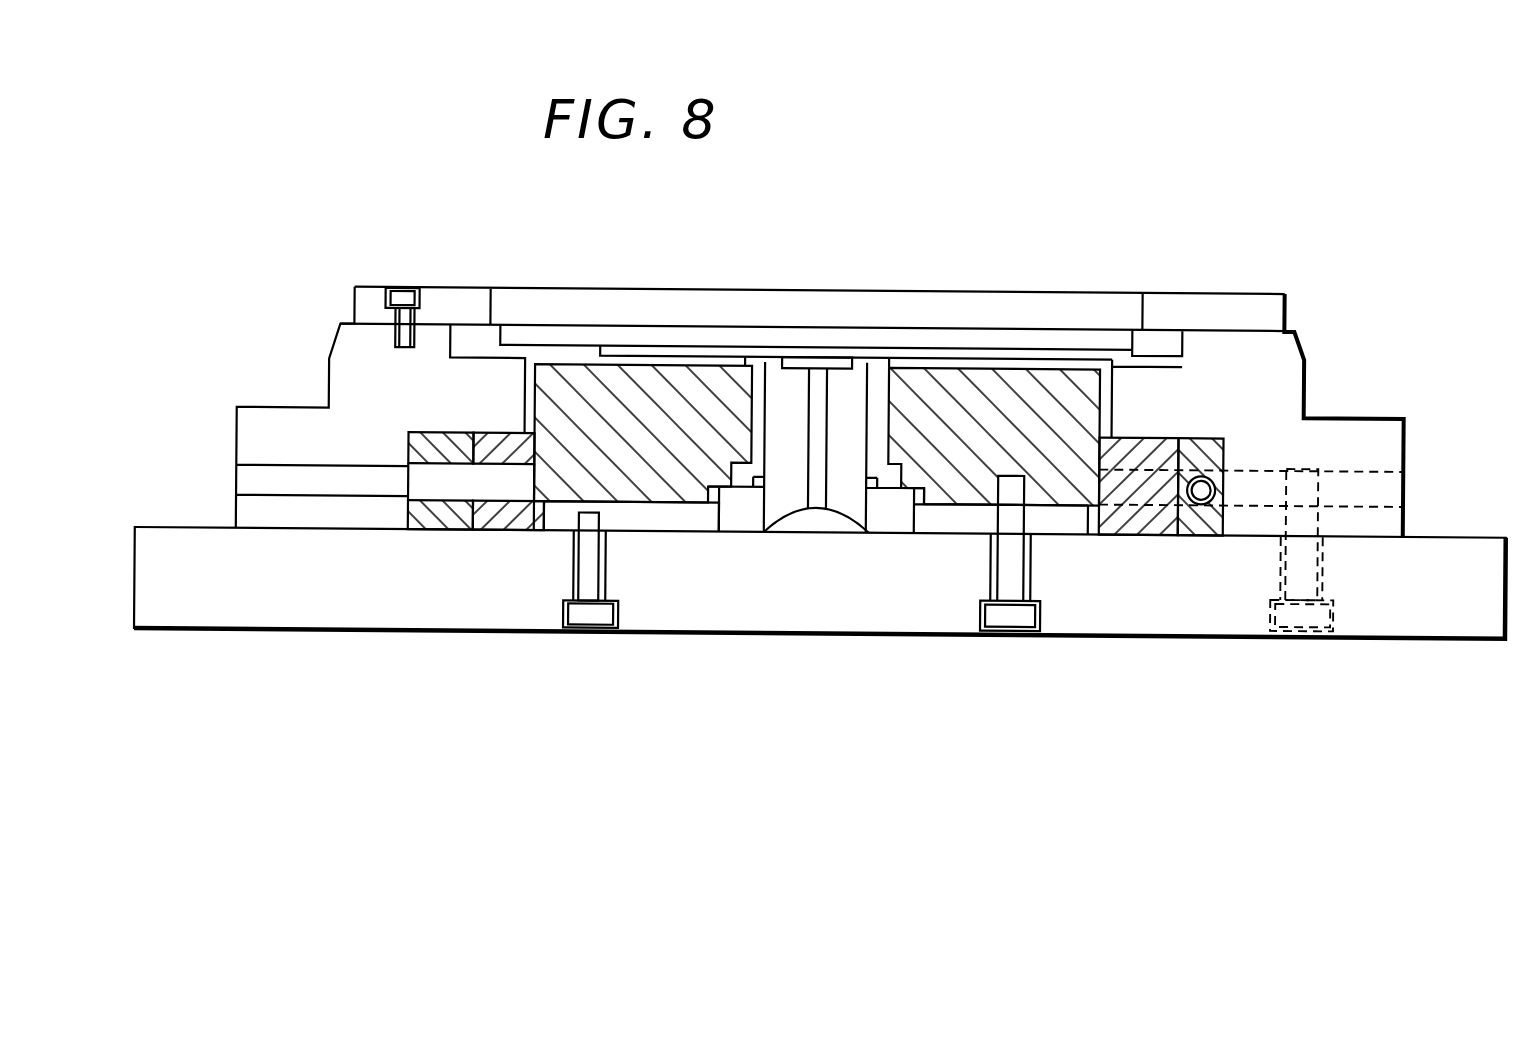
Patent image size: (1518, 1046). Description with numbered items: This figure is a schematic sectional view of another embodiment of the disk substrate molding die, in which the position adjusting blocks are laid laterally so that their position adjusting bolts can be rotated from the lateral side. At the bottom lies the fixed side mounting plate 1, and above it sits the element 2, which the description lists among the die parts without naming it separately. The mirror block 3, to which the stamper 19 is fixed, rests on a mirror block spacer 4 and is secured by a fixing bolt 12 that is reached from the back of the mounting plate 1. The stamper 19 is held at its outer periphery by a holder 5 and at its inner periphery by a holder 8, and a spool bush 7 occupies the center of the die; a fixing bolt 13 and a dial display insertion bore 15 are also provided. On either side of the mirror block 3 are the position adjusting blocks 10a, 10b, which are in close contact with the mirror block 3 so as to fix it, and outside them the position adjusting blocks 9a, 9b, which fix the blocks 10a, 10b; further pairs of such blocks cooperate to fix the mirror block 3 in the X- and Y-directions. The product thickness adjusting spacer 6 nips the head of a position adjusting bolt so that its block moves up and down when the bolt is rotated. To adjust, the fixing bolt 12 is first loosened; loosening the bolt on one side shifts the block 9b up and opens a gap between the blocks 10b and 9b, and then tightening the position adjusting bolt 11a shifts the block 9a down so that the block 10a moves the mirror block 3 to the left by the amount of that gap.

The fixed side mounting plate 1 is at (1163, 605).
The frame 2 is at (1250, 381).
The mirror block 3 is at (962, 388).
The mirror block spacer 4 is at (692, 512).
The holder 5 is at (1160, 340).
The product thickness adjusting spacer 6 is at (1257, 307).
The spool bush 7 is at (777, 482).
The holder 8 is at (748, 408).
The position adjusting block 9a is at (1200, 525).
The position adjusting block 9b is at (440, 516).
The position adjusting block 10a is at (1158, 517).
The position adjusting block 10b is at (512, 520).
The position adjusting bolt 11a is at (1223, 464).
The fixing bolt 12 is at (1020, 483).
The fixing bolt 13 is at (585, 603).
The dial display insertion bore 15 is at (315, 475).
The stamper 19 is at (920, 387).